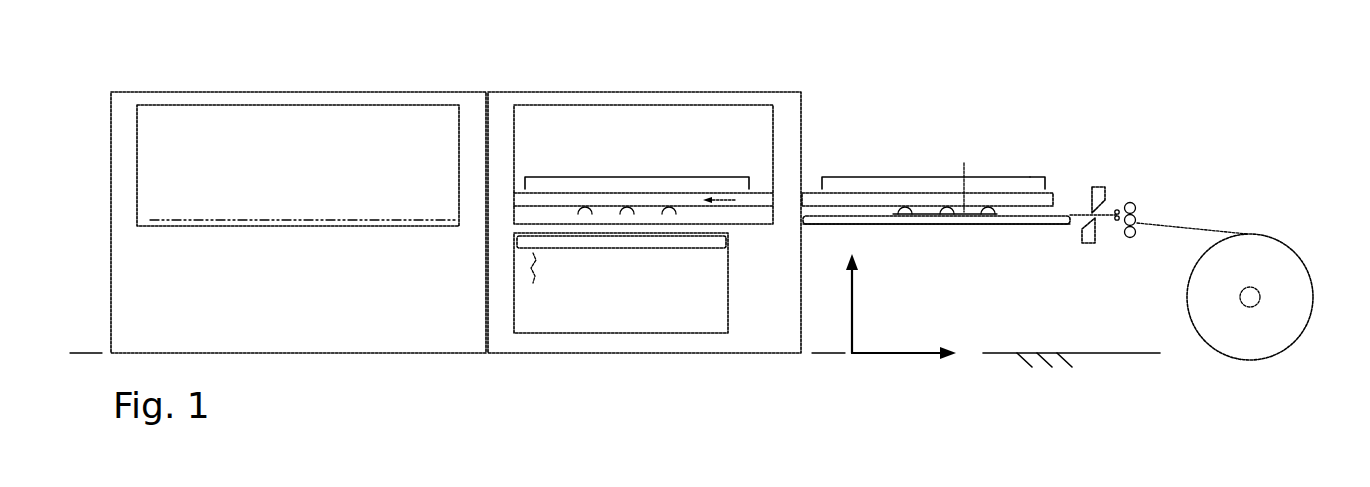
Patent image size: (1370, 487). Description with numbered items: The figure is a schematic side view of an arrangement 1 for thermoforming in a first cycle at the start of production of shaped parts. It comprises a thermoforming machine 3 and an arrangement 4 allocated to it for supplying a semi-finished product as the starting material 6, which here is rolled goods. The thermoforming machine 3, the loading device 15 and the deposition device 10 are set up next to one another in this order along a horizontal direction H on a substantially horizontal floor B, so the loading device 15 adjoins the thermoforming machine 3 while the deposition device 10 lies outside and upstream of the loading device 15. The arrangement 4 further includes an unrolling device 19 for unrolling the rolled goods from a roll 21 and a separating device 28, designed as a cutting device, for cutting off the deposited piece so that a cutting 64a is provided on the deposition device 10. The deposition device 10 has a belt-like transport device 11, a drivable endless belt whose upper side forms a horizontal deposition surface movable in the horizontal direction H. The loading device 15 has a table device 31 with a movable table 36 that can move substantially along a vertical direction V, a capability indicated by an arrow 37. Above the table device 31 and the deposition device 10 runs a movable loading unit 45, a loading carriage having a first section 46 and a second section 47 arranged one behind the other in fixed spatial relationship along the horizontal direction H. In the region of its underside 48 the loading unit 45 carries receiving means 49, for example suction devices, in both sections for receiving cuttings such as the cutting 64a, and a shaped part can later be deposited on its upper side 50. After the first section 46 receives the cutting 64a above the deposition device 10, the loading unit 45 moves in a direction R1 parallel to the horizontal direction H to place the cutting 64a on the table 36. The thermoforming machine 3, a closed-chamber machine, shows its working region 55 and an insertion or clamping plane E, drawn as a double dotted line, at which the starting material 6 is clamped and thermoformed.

The arrangement for thermoforming 1 is at (1320, 94).
The thermoforming machine 3 is at (338, 74).
The working region 55 is at (378, 197).
The insertion or clamping plane E is at (311, 220).
The loading device 15 is at (740, 74).
The second section 47 is at (688, 178).
The receiving means 49 is at (627, 208).
The direction of movement R1 is at (727, 200).
The table device 31 is at (609, 280).
The movable table 36 is at (631, 245).
The arrow 37 is at (533, 283).
The upper side of the loading unit 50 is at (890, 180).
The first section 46 is at (1035, 177).
The movable loading unit 45 is at (1000, 200).
The cutting 64a is at (974, 171).
The underside of the loading unit 48 is at (973, 224).
The belt-like transport device 11 is at (1047, 226).
The deposition device 10 is at (883, 232).
The separating device 28 is at (1098, 172).
The supply arrangement 4 is at (1245, 424).
The starting material 6 is at (1152, 229).
The unrolling device 19 is at (1265, 210).
The roll 21 is at (1293, 328).
The floor B is at (1088, 366).
The vertical direction V is at (852, 308).
The horizontal direction H is at (920, 355).